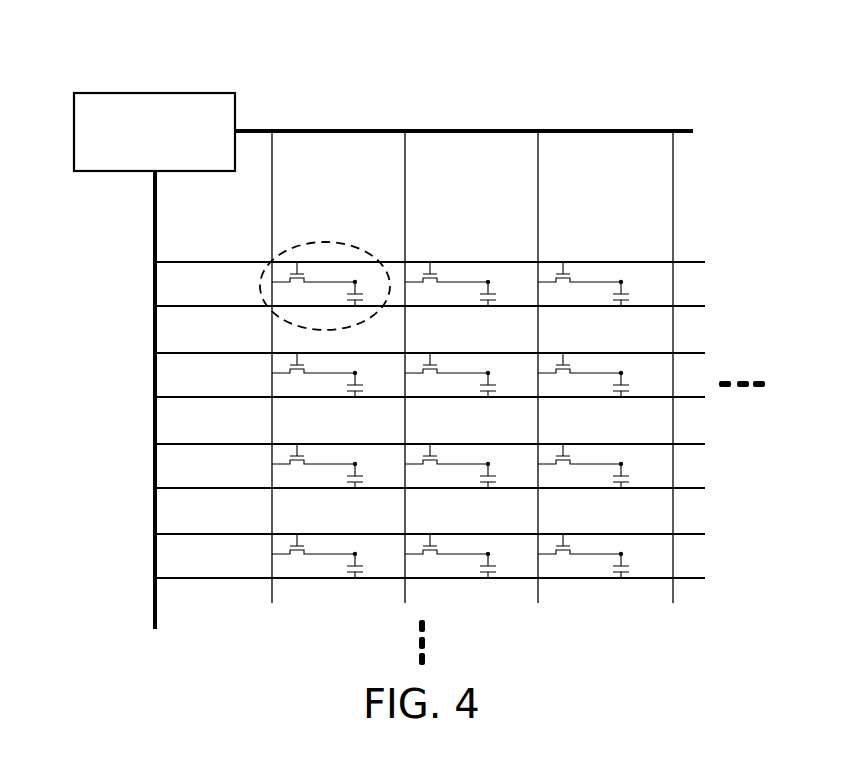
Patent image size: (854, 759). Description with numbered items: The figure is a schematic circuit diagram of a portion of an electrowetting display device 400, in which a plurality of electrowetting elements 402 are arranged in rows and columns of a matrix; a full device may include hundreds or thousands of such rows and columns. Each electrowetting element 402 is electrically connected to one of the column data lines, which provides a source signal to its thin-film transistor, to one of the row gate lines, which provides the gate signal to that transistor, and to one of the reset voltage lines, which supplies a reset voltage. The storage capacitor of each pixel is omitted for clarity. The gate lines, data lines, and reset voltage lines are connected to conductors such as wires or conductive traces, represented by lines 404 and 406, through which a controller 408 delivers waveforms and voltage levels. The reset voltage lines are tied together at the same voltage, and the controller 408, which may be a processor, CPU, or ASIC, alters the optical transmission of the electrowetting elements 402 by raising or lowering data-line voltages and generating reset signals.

The electrowetting display device 400 is at (617, 62).
The electrowetting element 402 is at (298, 243).
The line 404 is at (178, 186).
The line 406 is at (337, 150).
The controller 408 is at (154, 132).